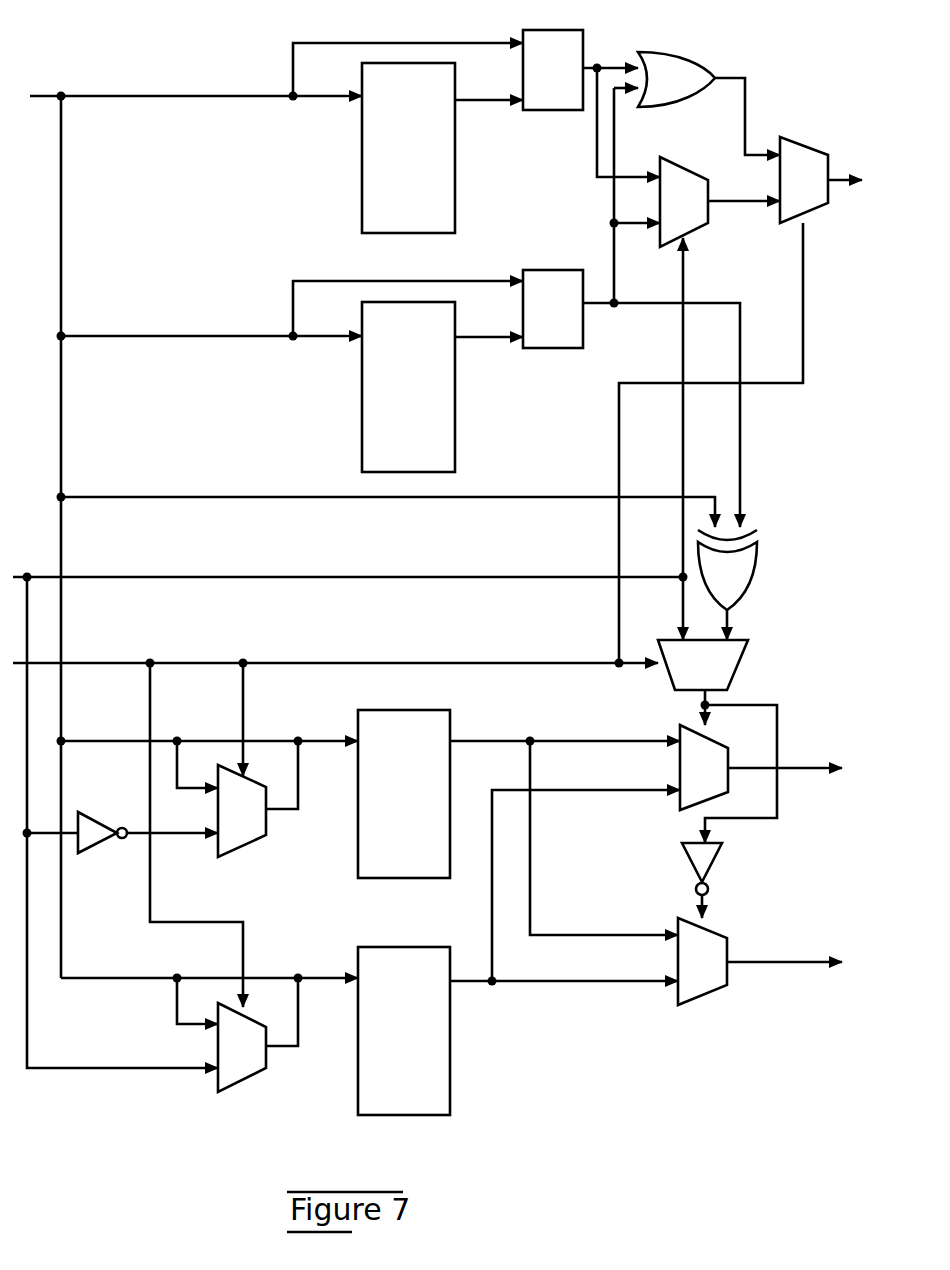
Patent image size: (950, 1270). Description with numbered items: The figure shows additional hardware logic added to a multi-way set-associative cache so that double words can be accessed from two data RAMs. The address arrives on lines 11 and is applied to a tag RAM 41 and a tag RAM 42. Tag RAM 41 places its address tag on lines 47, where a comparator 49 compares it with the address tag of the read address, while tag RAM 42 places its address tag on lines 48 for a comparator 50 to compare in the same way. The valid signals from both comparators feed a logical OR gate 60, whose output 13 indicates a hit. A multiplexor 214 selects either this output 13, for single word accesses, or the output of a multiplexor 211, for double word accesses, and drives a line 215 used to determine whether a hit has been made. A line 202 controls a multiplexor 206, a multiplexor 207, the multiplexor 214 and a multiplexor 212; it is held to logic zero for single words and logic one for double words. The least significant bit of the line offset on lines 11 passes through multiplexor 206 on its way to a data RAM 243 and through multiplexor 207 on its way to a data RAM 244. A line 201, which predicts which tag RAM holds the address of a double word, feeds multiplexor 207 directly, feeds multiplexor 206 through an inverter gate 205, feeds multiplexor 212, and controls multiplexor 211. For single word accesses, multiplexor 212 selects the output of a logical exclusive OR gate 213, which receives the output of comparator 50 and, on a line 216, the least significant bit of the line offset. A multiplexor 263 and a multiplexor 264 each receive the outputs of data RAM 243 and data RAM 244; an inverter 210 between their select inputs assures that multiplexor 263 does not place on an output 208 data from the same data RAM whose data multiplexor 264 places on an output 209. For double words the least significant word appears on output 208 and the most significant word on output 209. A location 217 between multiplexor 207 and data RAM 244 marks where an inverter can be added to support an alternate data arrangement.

The lines 11 is at (50, 96).
The tag RAM 41 is at (455, 220).
The tag RAM 42 is at (470, 455).
The lines 47 is at (470, 100).
The lines 48 is at (489, 317).
The comparator 49 is at (540, 110).
The comparator 50 is at (543, 348).
The logical OR gate 60 is at (672, 52).
The output of logical OR gate 13 is at (735, 78).
The multiplexor 211 is at (700, 228).
The multiplexor 214 is at (812, 205).
The line 215 is at (838, 172).
The line 216 is at (325, 497).
The logical EXCLUSIVE OR gate 213 is at (754, 588).
The multiplexor 212 is at (740, 676).
The line 201 is at (46, 577).
The line 202 is at (46, 663).
The inverter gate 205 is at (90, 853).
The multiplexor 206 is at (246, 848).
The multiplexor 207 is at (240, 1080).
The location 217 is at (300, 1024).
The data RAM 243 is at (405, 878).
The data RAM 244 is at (450, 1115).
The multiplexor 263 is at (680, 808).
The multiplexor 264 is at (704, 990).
The inverter 210 is at (712, 866).
The output 208 is at (790, 768).
The output 209 is at (785, 962).